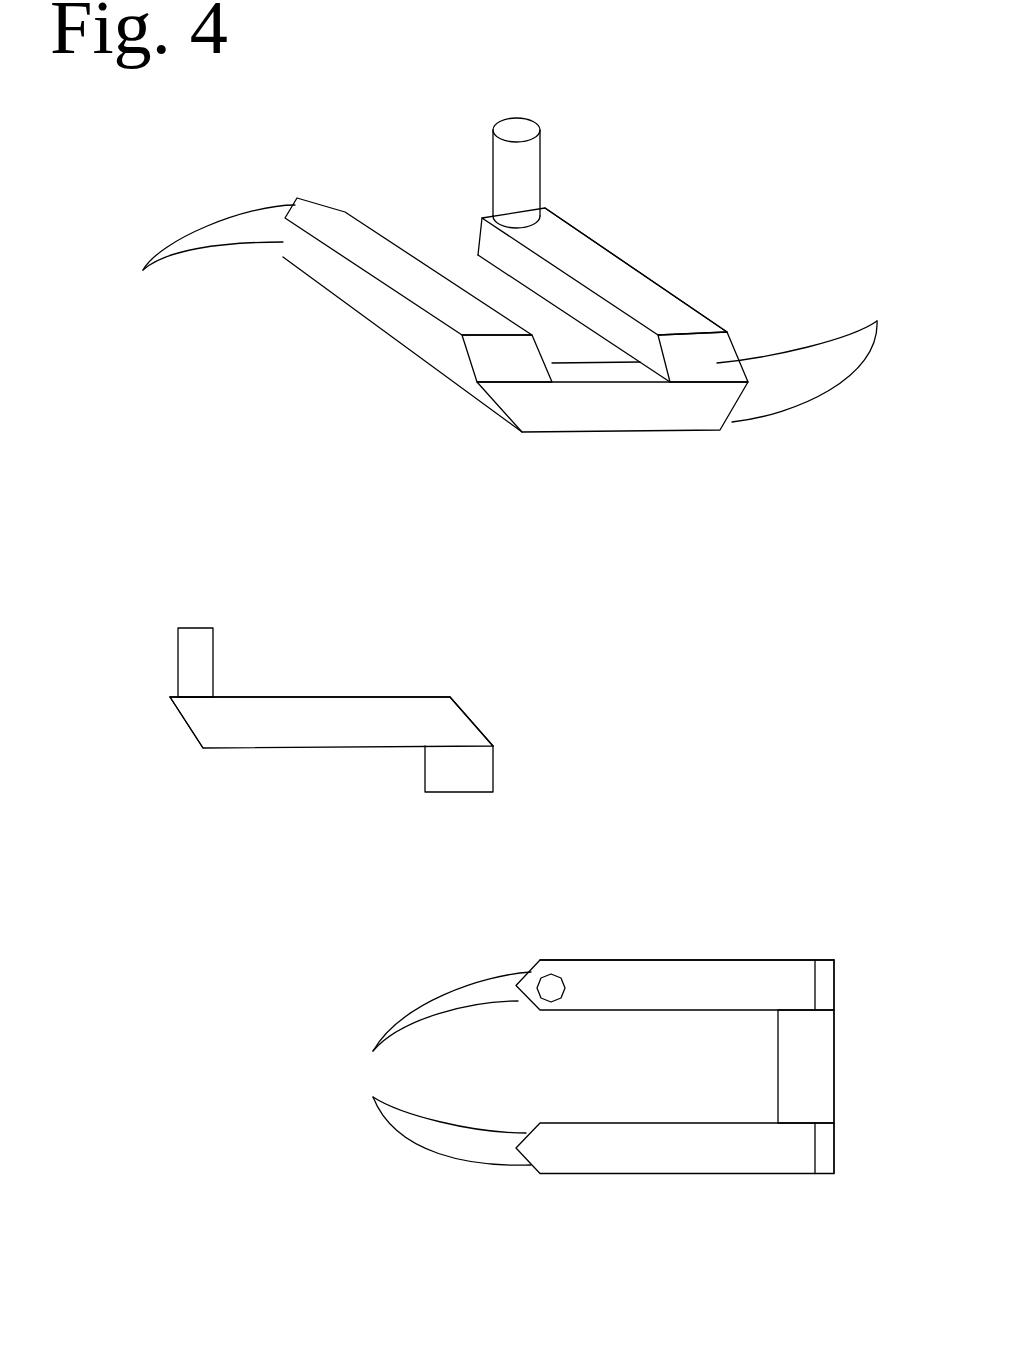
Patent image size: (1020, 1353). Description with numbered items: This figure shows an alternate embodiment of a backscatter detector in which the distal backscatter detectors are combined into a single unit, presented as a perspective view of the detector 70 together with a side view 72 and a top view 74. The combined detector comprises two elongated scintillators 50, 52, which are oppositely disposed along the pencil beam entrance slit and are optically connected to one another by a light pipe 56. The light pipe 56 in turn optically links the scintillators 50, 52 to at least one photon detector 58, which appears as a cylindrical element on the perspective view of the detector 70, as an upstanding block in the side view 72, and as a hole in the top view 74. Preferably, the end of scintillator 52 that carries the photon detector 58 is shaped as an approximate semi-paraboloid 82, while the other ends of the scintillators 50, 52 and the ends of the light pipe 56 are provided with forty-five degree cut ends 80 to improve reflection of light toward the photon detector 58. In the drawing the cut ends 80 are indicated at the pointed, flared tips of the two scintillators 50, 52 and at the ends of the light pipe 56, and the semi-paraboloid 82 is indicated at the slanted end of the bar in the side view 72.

The elongated scintillator 50 is at (358, 290).
The elongated scintillator 52 is at (637, 300).
The light pipe 56 is at (590, 422).
The photon detector 58 is at (527, 177).
The perspective view of the detector 70 is at (687, 300).
The side view 72 is at (285, 697).
The top view 74 is at (654, 960).
The cut ends 80 is at (483, 200).
The semi-paraboloid 82 is at (187, 727).